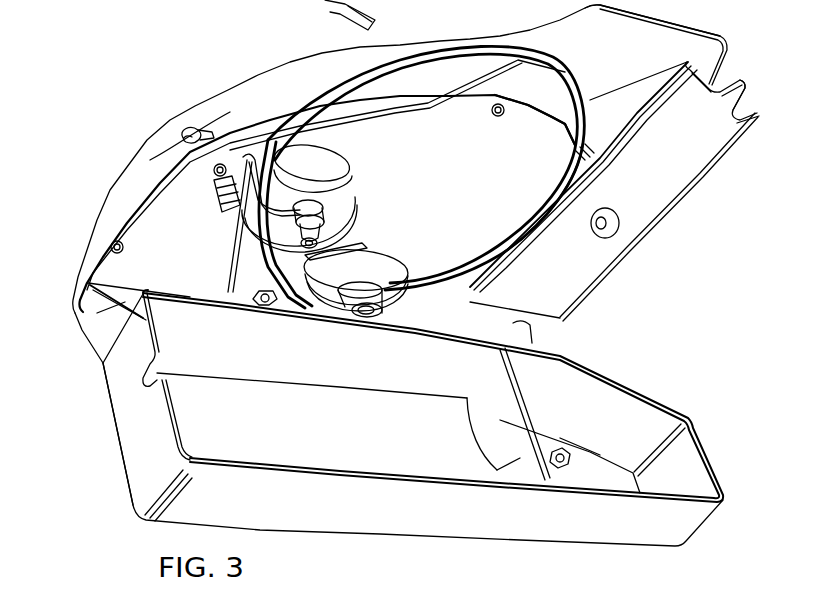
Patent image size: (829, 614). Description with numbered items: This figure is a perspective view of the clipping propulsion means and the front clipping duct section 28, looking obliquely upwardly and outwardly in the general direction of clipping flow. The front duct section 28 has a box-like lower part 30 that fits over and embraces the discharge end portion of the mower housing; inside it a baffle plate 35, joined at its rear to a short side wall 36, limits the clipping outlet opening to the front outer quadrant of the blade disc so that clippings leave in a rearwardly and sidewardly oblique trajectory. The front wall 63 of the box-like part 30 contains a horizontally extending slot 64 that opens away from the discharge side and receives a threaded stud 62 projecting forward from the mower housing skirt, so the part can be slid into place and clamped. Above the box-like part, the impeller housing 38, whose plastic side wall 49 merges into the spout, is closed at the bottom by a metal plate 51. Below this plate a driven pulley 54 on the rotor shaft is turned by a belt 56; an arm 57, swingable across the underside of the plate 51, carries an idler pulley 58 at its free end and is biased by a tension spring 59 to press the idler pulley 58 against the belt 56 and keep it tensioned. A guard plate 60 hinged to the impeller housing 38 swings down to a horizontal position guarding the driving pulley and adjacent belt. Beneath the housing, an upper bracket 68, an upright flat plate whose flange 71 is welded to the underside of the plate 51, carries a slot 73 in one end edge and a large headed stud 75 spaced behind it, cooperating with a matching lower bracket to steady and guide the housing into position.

The front clipping duct section 28 is at (86, 358).
The box-like lower part 30 is at (117, 467).
The baffle plate 35 is at (513, 425).
The short side wall 36 is at (547, 440).
The impeller housing 38 is at (224, 84).
The side wall 49 is at (210, 115).
The metal plate 51 is at (530, 117).
The driven pulley 54 is at (387, 265).
The belt 56 is at (447, 47).
The arm 57 is at (243, 262).
The idler pulley 58 is at (328, 172).
The tension spring 59 is at (227, 207).
The guard plate 60 is at (657, 37).
The threaded stud 62 is at (327, 10).
The front wall 63 is at (127, 410).
The slot 64 is at (160, 370).
The upper bracket 68 is at (691, 158).
The flange 71 is at (675, 85).
The slot 73 is at (747, 103).
The large headed stud 75 is at (600, 228).